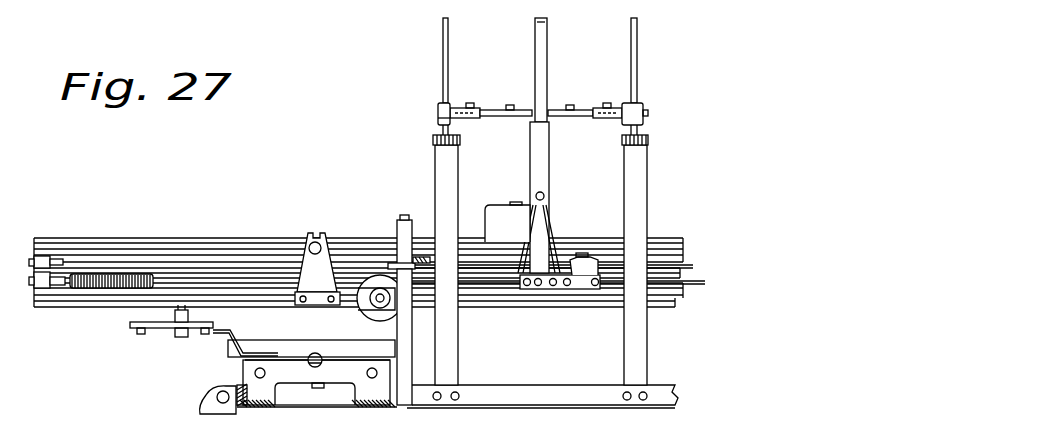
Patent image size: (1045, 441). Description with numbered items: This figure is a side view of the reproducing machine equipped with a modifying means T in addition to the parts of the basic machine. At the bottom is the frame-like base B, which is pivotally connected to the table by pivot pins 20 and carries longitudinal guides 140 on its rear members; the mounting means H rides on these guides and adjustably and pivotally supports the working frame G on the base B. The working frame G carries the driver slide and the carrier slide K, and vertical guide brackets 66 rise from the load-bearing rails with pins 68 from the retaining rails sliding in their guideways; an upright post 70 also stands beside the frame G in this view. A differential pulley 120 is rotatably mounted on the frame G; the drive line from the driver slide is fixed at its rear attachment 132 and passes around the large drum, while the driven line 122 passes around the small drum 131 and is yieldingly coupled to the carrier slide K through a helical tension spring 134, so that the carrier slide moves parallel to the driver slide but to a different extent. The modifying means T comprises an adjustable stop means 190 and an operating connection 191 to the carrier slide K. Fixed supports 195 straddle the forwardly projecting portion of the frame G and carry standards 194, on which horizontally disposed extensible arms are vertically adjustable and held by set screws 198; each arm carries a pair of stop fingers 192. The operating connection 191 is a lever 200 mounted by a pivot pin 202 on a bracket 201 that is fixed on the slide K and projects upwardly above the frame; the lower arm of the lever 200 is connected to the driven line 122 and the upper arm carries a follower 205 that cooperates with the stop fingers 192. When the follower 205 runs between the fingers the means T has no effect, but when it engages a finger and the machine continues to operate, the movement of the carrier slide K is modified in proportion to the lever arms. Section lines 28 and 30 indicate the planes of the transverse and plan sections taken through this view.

The drive line fixed attachment 132 is at (61, 262).
The helical tension spring 134 is at (98, 290).
The carrier slide K is at (122, 294).
The vertical guide bracket 66 is at (310, 268).
The pin 68 is at (321, 249).
The post 70 is at (404, 216).
The small drum 131 is at (388, 316).
The differential pulley 120 is at (383, 326).
The means adjustably pivotally mounting the frame H is at (275, 322).
The pivot pin 20 is at (218, 393).
The longitudinal guide 140 is at (297, 384).
The base B is at (527, 409).
The working frame G is at (667, 240).
The driven line 122 is at (695, 288).
The fixed support 195 is at (435, 143).
The standard 194 is at (442, 62).
The follower 205 is at (534, 47).
The adjustable stop means 190 is at (638, 66).
The stop finger 192 is at (525, 108).
The modifying means T is at (437, 113).
The set screw 198 is at (431, 121).
The operating connection 191 is at (549, 158).
The bracket 201 is at (556, 232).
The pivot pin 202 is at (545, 196).
The lever 200 is at (531, 188).
The section line 30— 30 is at (432, 93).
The section line 28— 28 is at (518, 70).